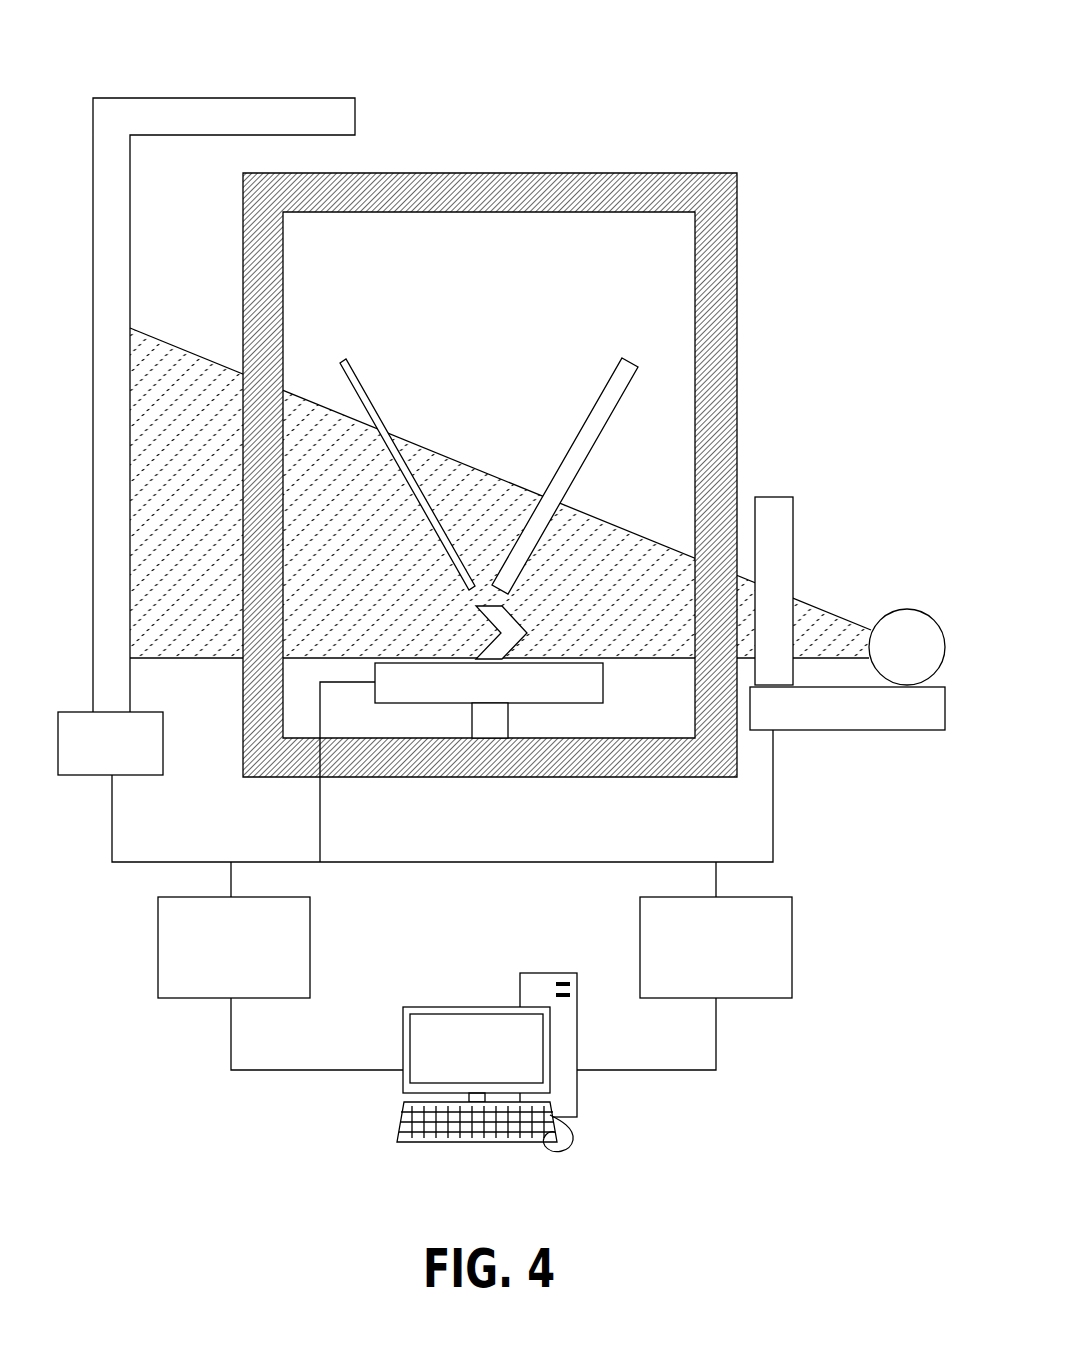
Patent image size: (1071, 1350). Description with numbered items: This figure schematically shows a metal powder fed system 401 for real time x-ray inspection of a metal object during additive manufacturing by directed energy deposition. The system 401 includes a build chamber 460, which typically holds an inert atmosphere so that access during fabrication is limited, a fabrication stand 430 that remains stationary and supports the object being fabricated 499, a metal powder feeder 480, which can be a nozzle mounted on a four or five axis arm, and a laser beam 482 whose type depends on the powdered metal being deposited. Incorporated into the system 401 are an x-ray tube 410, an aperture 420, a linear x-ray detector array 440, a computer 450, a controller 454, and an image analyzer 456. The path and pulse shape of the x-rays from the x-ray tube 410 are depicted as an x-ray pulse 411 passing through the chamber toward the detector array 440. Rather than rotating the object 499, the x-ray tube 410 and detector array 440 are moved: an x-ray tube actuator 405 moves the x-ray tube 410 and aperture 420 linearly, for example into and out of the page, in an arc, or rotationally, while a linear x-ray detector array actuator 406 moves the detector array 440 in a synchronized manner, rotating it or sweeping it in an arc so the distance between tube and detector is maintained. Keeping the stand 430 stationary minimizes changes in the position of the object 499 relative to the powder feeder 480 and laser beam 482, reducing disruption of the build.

The metal powder fed system 401 is at (143, 47).
The x-ray tube actuator 405 is at (920, 733).
The linear x-ray detector array actuator 406 is at (60, 778).
The x-ray tube 410 is at (908, 609).
The x-ray pulse 411 is at (152, 338).
The aperture 420 is at (793, 503).
The fabrication stand 430 is at (605, 682).
The linear x-ray detector array 440 is at (93, 270).
The computer 450 is at (577, 1087).
The controller 454 is at (792, 967).
The image analyzer 456 is at (158, 967).
The build chamber 460 is at (737, 278).
The metal powder feeder 480 is at (602, 382).
The laser beam 482 is at (363, 386).
The object being fabricated 499 is at (527, 635).